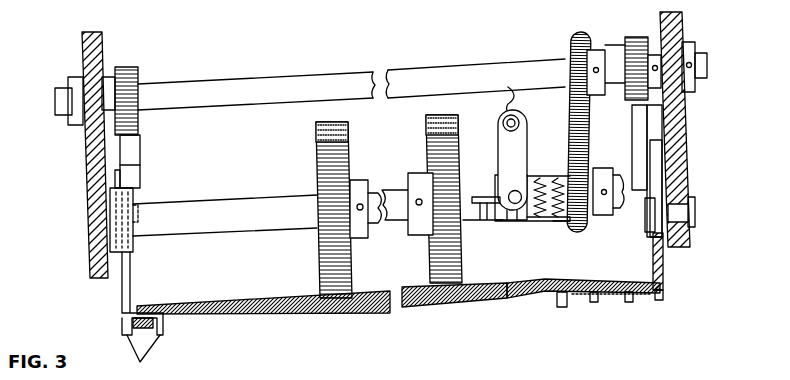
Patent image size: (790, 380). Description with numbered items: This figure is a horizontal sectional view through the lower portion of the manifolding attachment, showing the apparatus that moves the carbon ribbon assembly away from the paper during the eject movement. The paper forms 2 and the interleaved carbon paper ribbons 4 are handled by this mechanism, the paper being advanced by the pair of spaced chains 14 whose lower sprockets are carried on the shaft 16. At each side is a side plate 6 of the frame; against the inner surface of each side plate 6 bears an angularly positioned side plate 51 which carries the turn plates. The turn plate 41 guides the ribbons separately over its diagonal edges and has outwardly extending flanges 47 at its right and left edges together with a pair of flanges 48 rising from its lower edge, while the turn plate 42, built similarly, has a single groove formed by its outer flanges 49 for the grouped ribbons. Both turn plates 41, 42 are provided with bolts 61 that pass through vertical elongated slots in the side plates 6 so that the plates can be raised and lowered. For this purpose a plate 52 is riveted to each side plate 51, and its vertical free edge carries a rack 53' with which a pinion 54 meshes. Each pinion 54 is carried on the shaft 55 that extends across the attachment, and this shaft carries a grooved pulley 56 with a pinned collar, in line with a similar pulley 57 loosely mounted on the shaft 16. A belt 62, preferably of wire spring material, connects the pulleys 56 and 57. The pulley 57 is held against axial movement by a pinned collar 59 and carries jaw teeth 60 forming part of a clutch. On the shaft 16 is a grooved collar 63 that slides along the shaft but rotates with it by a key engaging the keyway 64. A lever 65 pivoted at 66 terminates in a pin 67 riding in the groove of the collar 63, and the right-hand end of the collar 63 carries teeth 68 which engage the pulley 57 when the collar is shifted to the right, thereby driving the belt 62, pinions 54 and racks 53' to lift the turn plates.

The paper forms 2 is at (434, 310).
The carbon paper ribbons 4 is at (522, 297).
The side plates 6 is at (82, 172).
The chains 14 is at (318, 287).
The shaft 16 is at (243, 203).
The turn plate 41 is at (664, 265).
The turn plate 42 is at (131, 282).
The flanges 47 is at (556, 308).
The flanges 48 is at (628, 303).
The outer flanges 49 is at (144, 356).
The side plate 51 is at (661, 182).
The plate 52 is at (141, 170).
The rack 53' is at (435, 140).
The pinion 54 is at (140, 70).
The shaft 55 is at (450, 72).
The grooved pulley 56 is at (566, 44).
The pulley 57 is at (568, 223).
The pinned collar 59 is at (601, 218).
The jaw teeth 60 is at (556, 177).
The bolts 61 is at (690, 212).
The belt 62 is at (587, 128).
The grooved collar 63 is at (499, 215).
The keyway 64 is at (481, 206).
The lever 65 is at (503, 145).
The pivot 66 is at (514, 96).
The pin 67 is at (520, 222).
The teeth 68 is at (538, 177).